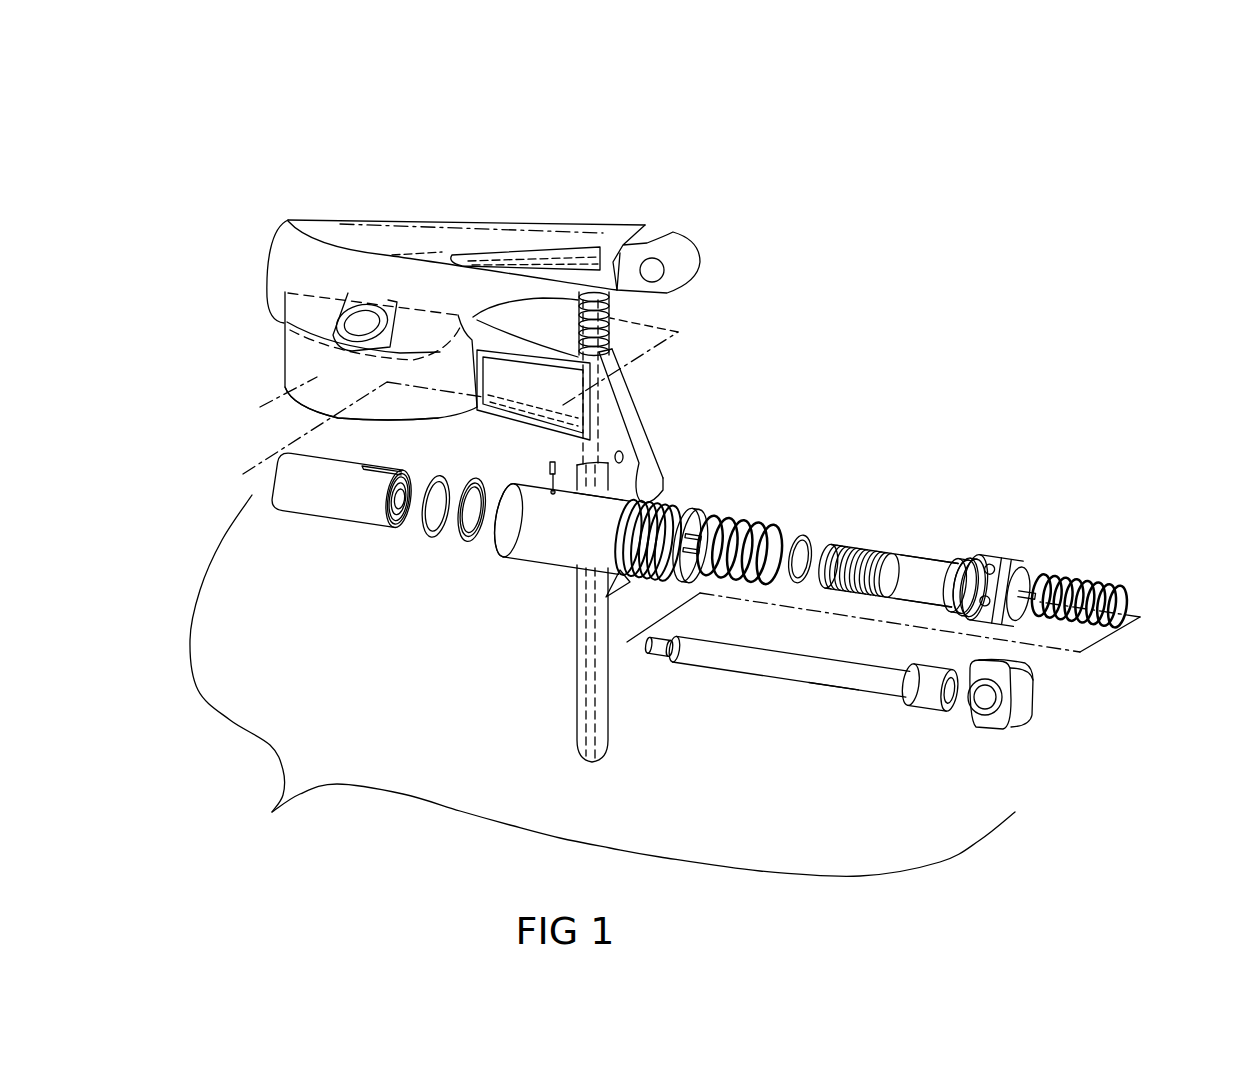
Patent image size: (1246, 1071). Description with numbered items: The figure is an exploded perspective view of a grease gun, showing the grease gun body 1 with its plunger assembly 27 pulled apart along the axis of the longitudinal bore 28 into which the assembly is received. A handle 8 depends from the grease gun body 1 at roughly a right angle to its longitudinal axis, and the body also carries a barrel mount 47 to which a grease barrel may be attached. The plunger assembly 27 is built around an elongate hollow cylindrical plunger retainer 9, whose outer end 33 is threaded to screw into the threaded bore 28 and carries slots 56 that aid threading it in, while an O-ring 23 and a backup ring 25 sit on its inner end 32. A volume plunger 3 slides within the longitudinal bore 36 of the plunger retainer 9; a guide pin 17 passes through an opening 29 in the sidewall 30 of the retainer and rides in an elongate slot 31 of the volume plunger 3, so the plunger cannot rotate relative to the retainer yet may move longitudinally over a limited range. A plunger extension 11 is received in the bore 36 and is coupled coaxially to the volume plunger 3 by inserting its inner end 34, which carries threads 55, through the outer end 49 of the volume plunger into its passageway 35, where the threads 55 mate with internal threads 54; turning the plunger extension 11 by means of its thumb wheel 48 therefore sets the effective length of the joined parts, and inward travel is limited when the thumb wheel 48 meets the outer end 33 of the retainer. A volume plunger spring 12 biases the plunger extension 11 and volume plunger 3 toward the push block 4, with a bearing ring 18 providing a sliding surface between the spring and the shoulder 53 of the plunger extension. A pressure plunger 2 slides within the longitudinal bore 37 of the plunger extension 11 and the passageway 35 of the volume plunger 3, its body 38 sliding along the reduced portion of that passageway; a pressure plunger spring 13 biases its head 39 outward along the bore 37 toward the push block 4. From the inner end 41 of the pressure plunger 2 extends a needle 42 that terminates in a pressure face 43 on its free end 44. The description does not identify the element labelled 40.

The grease gun body 1 is at (291, 221).
The pressure plunger 2 is at (788, 677).
The volume plunger 3 is at (320, 510).
The push block 4 is at (1003, 732).
The handle 8 is at (600, 690).
The plunger retainer 9 is at (560, 530).
The plunger extension 11 is at (910, 565).
The volume plunger spring 12 is at (801, 535).
The pressure plunger spring 13 is at (1084, 582).
The guide pin 17 is at (556, 462).
The bearing ring 18 is at (822, 547).
The O-ring 23 is at (428, 540).
The backup ring 25 is at (463, 547).
The plunger assembly 27 is at (602, 685).
The longitudinal bore 28 is at (610, 311).
The opening 29 is at (556, 491).
The sidewall 30 is at (593, 535).
The elongate slot 31 is at (362, 468).
The inner end 32 is at (500, 552).
The outer end 33 is at (640, 575).
The inner end 34 is at (845, 542).
The passageway 35 is at (399, 528).
The longitudinal bore 36 is at (692, 518).
The longitudinal bore 37 is at (1020, 578).
The body 38 is at (840, 678).
The head 39 is at (917, 693).
The sleeve end 40 is at (953, 682).
The inner end 41 is at (687, 650).
The needle 42 is at (652, 645).
The pressure face 43 is at (624, 577).
The free end 44 is at (650, 647).
The barrel mount 47 is at (312, 380).
The thumb wheel 48 is at (1012, 628).
The outer end 49 is at (413, 477).
The shoulder 53 is at (962, 562).
The internal threads 54 is at (398, 511).
The threads 55 is at (869, 550).
The slots 56 is at (752, 528).